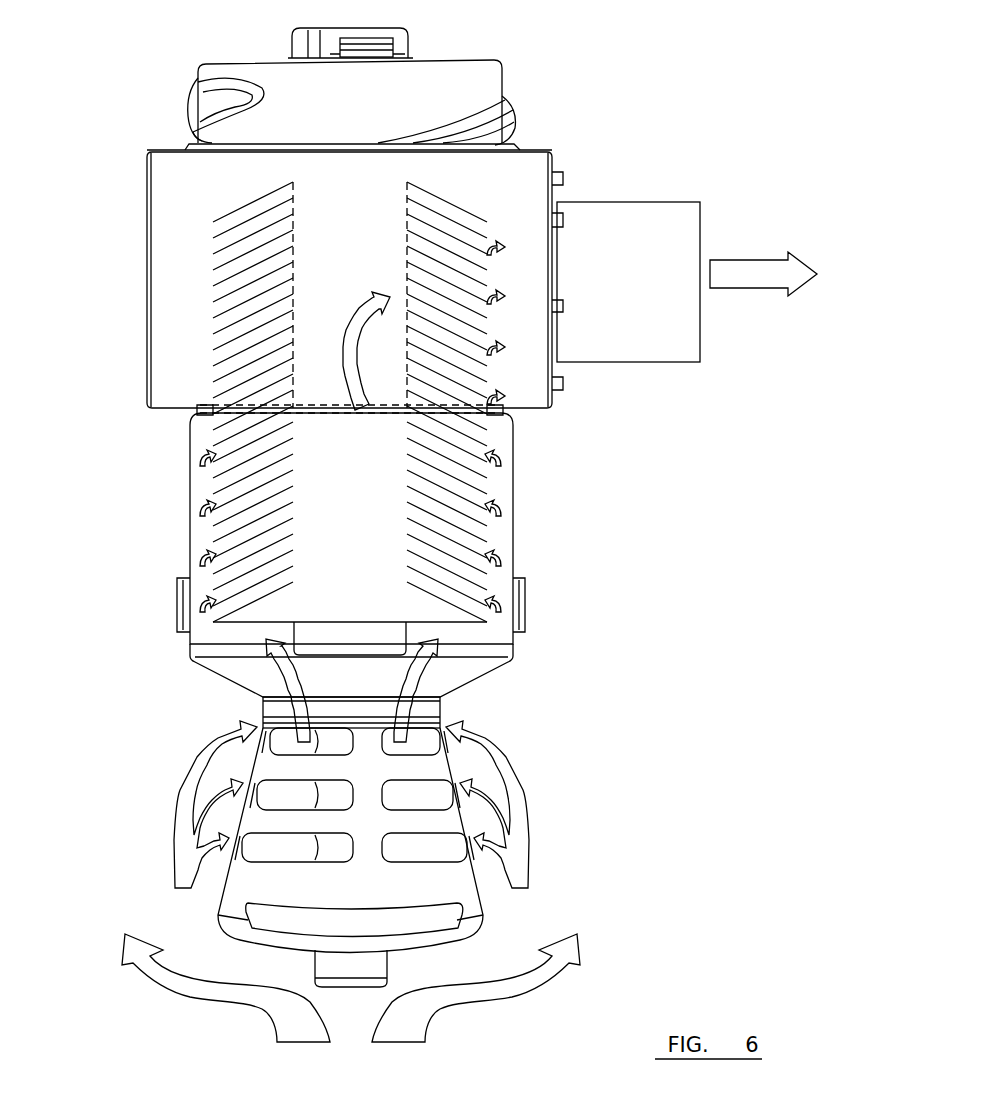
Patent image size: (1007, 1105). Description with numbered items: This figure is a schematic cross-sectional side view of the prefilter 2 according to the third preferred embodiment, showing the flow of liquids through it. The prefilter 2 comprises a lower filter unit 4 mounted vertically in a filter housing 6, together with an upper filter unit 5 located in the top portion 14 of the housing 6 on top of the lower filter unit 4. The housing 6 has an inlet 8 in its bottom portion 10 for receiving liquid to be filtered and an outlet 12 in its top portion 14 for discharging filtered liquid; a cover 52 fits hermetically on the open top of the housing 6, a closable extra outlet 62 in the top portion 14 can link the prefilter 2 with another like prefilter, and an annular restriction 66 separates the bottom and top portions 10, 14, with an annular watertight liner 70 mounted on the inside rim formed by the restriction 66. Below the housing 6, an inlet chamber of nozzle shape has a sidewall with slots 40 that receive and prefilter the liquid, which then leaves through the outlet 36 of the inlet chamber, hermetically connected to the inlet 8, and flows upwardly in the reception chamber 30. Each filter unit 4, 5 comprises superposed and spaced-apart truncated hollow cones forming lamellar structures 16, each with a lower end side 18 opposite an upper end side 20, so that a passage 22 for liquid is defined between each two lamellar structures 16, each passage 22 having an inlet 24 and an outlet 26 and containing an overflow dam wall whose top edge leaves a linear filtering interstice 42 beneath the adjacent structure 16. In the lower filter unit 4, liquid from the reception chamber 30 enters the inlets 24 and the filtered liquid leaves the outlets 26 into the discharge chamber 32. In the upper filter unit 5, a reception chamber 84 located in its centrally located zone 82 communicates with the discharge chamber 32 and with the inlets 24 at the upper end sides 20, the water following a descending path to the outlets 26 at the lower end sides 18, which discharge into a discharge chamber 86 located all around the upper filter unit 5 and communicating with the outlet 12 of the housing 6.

The prefilter 2 is at (122, 74).
The lower filter unit 4 is at (222, 486).
The upper filter unit 5 is at (228, 206).
The filter housing 6 is at (130, 272).
The inlet 8 is at (352, 700).
The bottom portion 10 is at (190, 548).
The outlet 12 is at (560, 244).
The top portion 14 is at (161, 212).
The lamellar structures 16 is at (233, 344).
The lower end side 18 is at (213, 268).
The upper end side 20 is at (293, 263).
The passage 22 is at (212, 295).
The inlet 24 is at (392, 252).
The outlet 26 is at (490, 325).
The reception chamber 30 is at (198, 493).
The discharge chamber 32 is at (339, 592).
The outlet of the inlet chamber 36 is at (357, 724).
The slots 40 is at (409, 802).
The linear filtering interstice 42 is at (407, 428).
The cover 52 is at (478, 76).
The closable extra outlet 62 is at (147, 379).
The annular restriction 66 is at (510, 421).
The annular watertight liner 70 is at (198, 425).
The centrally located zone 82 is at (333, 214).
The reception chamber 84 is at (317, 300).
The discharge chamber 86 is at (169, 390).